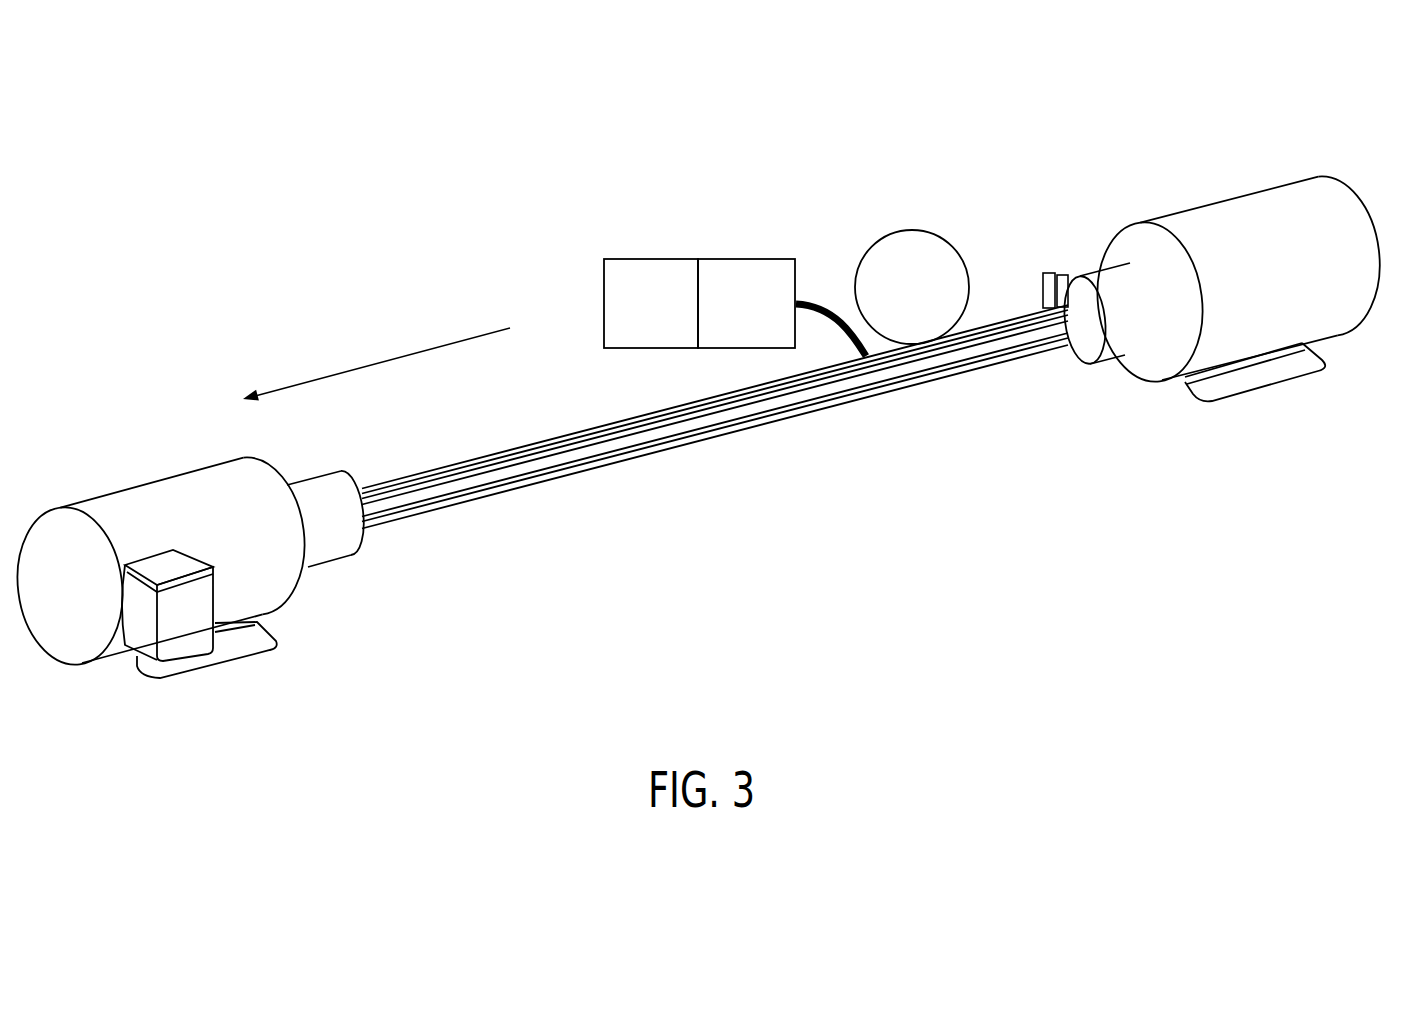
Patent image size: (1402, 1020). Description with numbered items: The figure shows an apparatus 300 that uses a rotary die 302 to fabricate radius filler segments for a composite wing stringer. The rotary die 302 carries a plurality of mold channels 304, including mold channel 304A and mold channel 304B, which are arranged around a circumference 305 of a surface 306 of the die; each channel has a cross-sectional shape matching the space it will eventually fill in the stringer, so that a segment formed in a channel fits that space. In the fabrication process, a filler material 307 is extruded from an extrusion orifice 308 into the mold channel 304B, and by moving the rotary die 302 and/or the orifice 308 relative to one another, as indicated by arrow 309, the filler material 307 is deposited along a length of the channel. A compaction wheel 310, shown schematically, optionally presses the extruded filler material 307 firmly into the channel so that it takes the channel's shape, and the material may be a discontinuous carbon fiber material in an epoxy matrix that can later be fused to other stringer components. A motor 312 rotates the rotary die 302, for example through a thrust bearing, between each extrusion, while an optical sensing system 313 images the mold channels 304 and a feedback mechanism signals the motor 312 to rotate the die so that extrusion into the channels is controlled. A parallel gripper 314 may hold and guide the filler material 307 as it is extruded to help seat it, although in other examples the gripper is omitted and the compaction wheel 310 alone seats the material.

The apparatus 300 is at (659, 99).
The rotary die 302 is at (715, 426).
The mold channels 304 is at (483, 465).
The mold channel 304A is at (527, 477).
The mold channel 304B is at (543, 443).
The circumference 305 is at (390, 554).
The surface 306 is at (898, 417).
The filler material 307 is at (818, 328).
The extrusion orifice 308 is at (763, 318).
The arrow 309 is at (387, 358).
The compaction wheel 310 is at (929, 300).
The motor 312 is at (217, 699).
The optical sensing system 313 is at (668, 318).
The parallel gripper 314 is at (1065, 275).